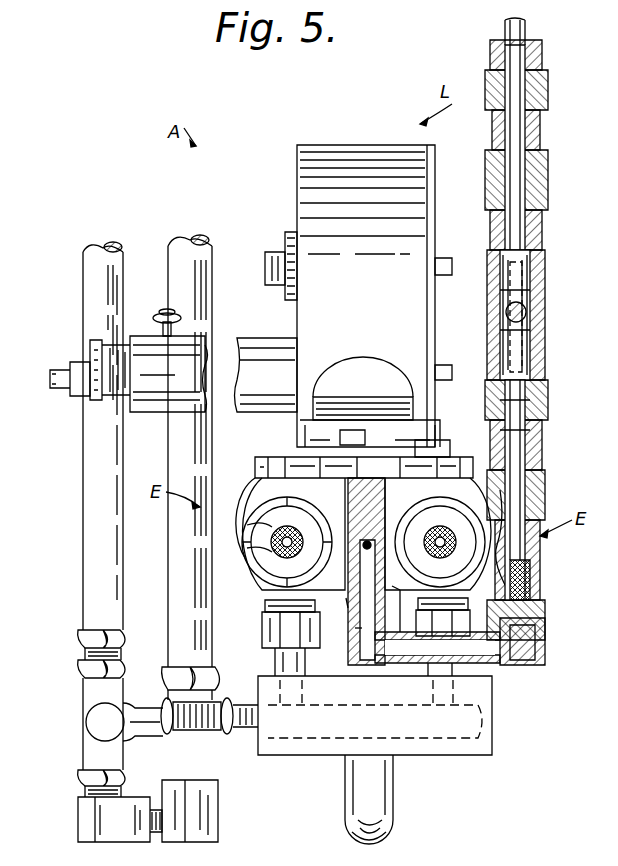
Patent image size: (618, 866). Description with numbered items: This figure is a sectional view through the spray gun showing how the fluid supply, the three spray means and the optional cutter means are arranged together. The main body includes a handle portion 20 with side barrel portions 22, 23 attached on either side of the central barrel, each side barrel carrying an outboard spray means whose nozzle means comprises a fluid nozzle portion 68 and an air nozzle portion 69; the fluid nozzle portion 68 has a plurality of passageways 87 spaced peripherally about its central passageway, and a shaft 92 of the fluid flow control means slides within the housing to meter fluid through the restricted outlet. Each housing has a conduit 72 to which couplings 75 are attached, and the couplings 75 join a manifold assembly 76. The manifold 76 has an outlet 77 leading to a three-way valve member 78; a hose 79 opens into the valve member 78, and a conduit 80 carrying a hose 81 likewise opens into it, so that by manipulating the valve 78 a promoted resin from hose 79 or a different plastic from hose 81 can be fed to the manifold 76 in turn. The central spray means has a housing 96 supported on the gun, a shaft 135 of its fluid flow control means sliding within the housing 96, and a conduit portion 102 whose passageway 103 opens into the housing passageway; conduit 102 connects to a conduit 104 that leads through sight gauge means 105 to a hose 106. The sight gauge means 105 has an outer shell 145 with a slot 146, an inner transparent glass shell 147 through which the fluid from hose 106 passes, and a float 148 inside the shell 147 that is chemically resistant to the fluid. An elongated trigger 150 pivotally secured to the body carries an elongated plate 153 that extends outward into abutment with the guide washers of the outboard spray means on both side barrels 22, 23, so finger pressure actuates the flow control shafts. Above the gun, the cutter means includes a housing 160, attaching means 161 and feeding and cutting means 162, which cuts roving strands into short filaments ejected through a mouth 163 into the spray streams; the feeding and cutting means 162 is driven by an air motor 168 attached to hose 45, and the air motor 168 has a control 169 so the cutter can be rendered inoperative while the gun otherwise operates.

The handle portion 20 is at (372, 843).
The side barrel portion 22 is at (256, 490).
The side barrel portion 23 is at (522, 488).
The hose 45 is at (62, 388).
The fluid nozzle portion 68 is at (247, 548).
The air nozzle portion 69 is at (247, 525).
The conduit 72 is at (266, 604).
The couplings 75 is at (276, 662).
The manifold assembly 76 is at (438, 748).
The outlet 77 is at (236, 745).
The three-way valve member 78 is at (92, 722).
The hose 79 is at (86, 570).
The conduit 80 is at (205, 824).
The hose 81 is at (178, 578).
The passageways 87 is at (287, 553).
The shaft 92 is at (287, 542).
The housing 96 is at (364, 467).
The conduit portion 102 is at (350, 604).
The passageway 103 is at (362, 628).
The conduit 104 is at (520, 660).
The sight gauge means 105 is at (568, 306).
The hose 106 is at (526, 22).
The shaft 135 is at (366, 571).
The outer shell 145 is at (540, 264).
The slot 146 is at (528, 346).
The inner transparent glass shell 147 is at (544, 286).
The float 148 is at (527, 316).
The trigger 150 is at (386, 792).
The elongated plate 153 is at (405, 609).
The housing 160 is at (362, 128).
The attaching means 161 is at (448, 448).
The feeding and cutting means 162 is at (368, 422).
The mouth 163 is at (368, 358).
The air motor 168 is at (202, 342).
The control 169 is at (166, 312).